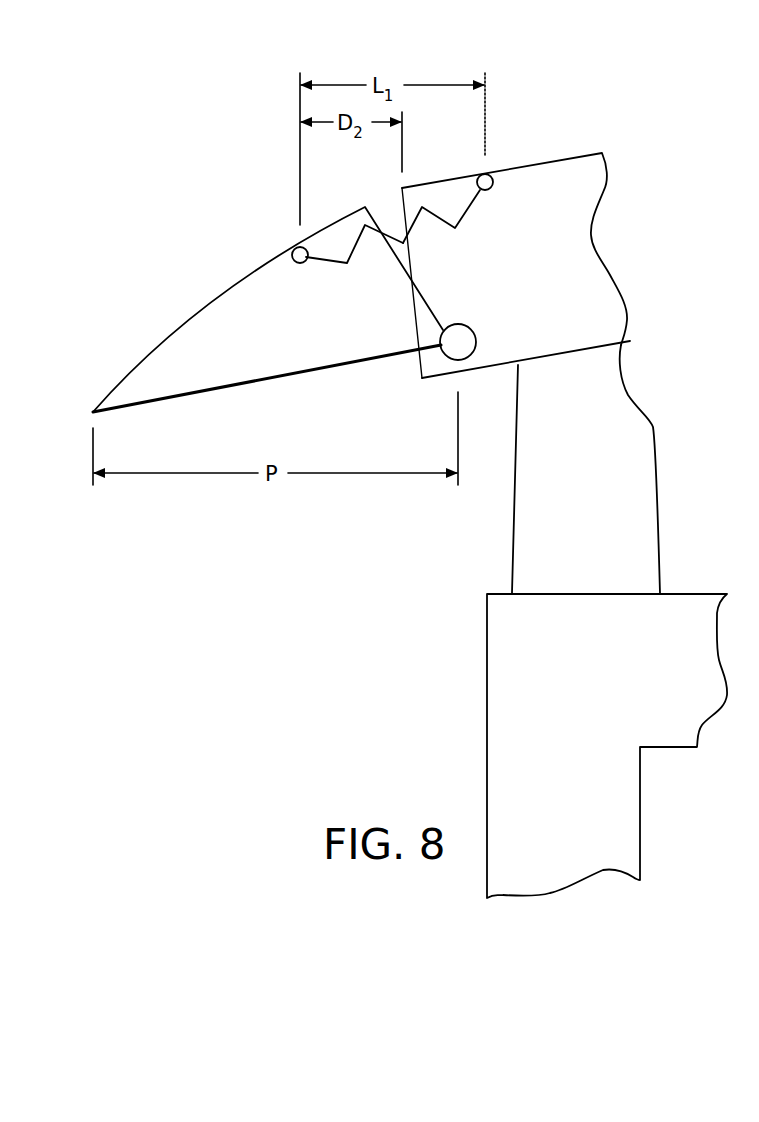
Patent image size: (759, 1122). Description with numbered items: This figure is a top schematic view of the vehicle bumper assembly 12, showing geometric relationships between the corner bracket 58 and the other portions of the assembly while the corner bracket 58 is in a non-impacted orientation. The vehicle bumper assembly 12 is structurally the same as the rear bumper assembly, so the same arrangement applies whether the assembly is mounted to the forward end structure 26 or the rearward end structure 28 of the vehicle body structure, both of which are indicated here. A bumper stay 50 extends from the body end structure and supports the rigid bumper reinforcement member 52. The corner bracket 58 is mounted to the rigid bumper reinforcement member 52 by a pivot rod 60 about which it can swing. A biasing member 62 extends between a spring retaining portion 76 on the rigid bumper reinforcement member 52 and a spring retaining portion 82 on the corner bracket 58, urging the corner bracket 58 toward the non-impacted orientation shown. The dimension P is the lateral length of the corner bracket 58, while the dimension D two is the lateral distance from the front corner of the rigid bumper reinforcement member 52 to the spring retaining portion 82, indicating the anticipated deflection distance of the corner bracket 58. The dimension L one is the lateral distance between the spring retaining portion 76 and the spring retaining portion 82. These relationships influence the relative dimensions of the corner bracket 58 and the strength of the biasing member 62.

The vehicle bumper assembly 12 is at (558, 128).
The forward end structure 26 is at (525, 663).
The rearward end structure 28 is at (556, 746).
The bumper stay 50 is at (610, 497).
The rigid bumper reinforcement member 52 is at (570, 270).
The corner bracket 58 is at (245, 352).
The pivot rod 60 is at (474, 334).
The biasing member 62 is at (357, 247).
The spring retaining portion of the rigid bumper reinforcement member 76 is at (491, 189).
The spring retaining portion of the corner bracket 82 is at (294, 250).